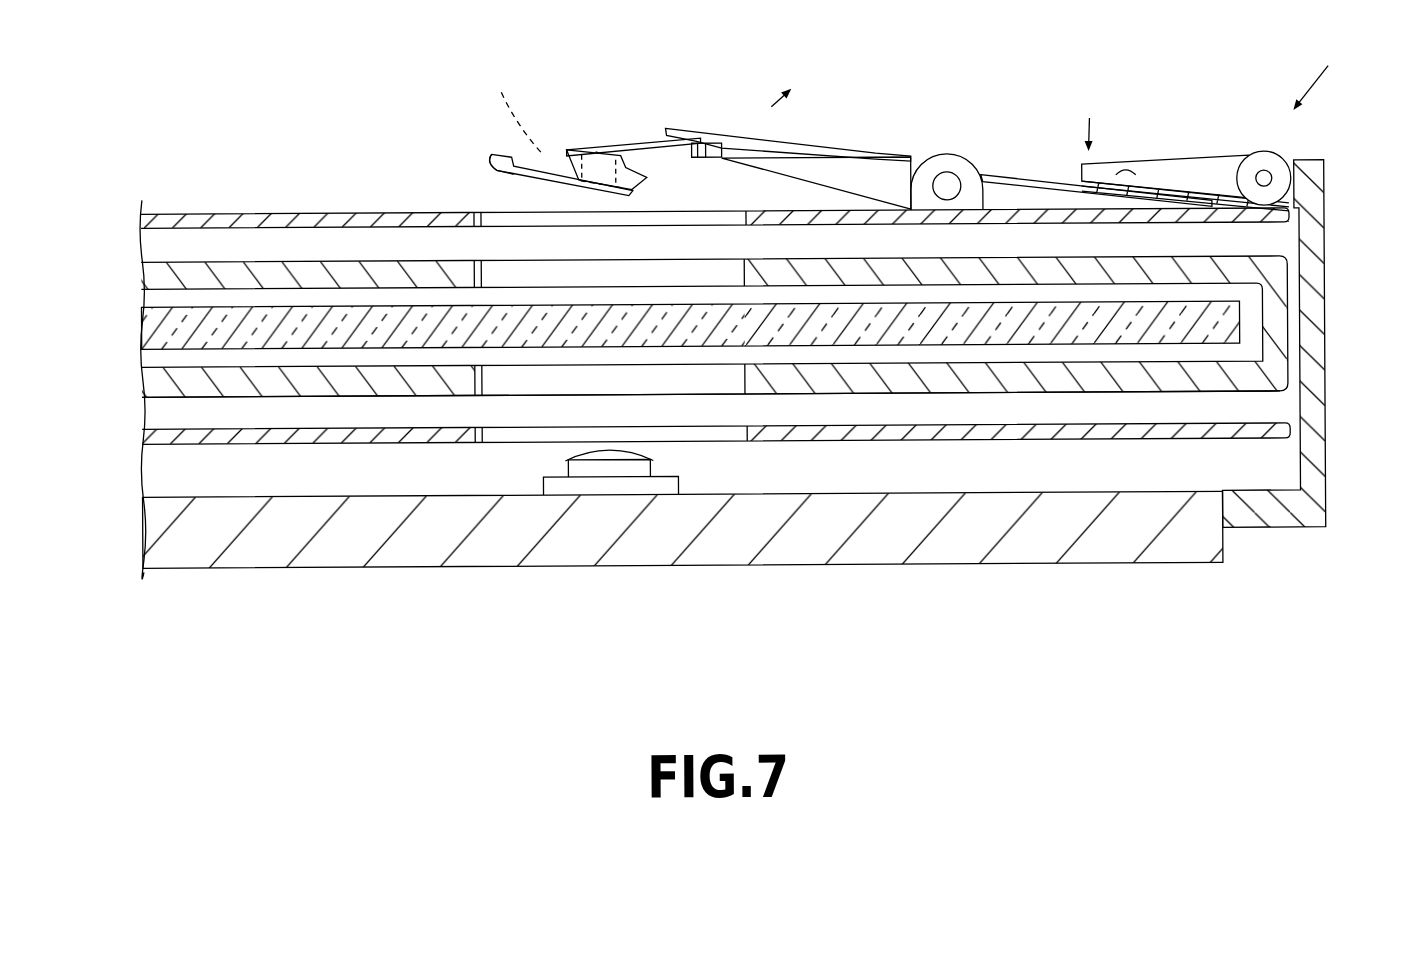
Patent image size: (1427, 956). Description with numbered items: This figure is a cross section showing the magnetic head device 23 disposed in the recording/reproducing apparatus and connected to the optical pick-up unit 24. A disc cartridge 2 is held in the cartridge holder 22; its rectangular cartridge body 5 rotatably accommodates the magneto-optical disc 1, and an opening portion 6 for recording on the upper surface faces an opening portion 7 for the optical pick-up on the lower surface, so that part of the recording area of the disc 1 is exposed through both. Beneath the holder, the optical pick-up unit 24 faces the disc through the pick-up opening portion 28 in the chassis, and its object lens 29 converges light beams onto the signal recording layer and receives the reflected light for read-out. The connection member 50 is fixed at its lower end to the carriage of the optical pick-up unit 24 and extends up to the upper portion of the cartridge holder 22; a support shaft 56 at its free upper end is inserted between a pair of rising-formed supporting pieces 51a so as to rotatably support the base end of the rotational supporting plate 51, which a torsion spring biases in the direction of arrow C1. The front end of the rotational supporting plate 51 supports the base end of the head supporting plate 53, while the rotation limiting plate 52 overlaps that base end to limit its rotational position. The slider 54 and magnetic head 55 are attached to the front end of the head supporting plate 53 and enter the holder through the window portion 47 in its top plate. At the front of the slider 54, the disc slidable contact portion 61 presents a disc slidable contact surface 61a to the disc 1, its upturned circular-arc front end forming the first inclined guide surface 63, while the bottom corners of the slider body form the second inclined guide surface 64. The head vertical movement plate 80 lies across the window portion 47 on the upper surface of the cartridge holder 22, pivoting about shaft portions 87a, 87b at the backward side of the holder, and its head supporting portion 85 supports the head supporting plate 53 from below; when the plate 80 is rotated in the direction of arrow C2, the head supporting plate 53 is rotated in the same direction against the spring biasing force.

The magneto-optical disc 1 is at (147, 329).
The disc cartridge 2 is at (1280, 317).
The cartridge body 5 is at (146, 384).
The opening portion for recording 6 is at (478, 275).
The opening portion for optical pick-up unit 7 is at (480, 398).
The cartridge holder 22 is at (240, 218).
The magnetic head device 23 is at (1393, 64).
The optical pick-up unit 24 is at (882, 560).
The opening portion for pick-up 28 is at (497, 445).
The object lens 29 is at (628, 470).
The window portion 47 is at (479, 212).
The connection member 50 is at (1327, 254).
The rotational supporting plate 51 is at (1180, 186).
The supporting pieces 51a is at (1238, 163).
The rotation limiting plate 52 is at (1022, 182).
The head supporting plate 53 is at (641, 152).
The slider 54 is at (597, 154).
The magnetic head 55 is at (510, 105).
The support shaft 56 is at (1278, 186).
The disc slidable contact portion 61 is at (498, 157).
The disc slidable contact surface 61a is at (514, 183).
The first inclined guide surface 63 is at (487, 167).
The second inclined guide surface 64 is at (655, 192).
The head vertical movement plate 80 is at (883, 167).
The head supporting portion 85 is at (708, 146).
The shaft portion 87a is at (950, 179).
The shaft portion 87b is at (947, 186).
The arrow C1 is at (1072, 141).
The arrow C2 is at (802, 97).